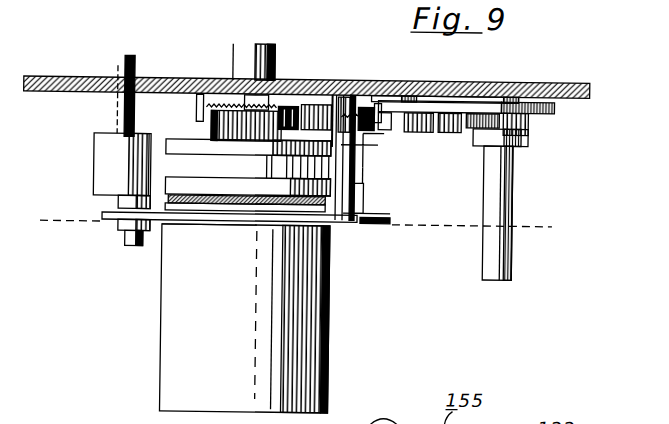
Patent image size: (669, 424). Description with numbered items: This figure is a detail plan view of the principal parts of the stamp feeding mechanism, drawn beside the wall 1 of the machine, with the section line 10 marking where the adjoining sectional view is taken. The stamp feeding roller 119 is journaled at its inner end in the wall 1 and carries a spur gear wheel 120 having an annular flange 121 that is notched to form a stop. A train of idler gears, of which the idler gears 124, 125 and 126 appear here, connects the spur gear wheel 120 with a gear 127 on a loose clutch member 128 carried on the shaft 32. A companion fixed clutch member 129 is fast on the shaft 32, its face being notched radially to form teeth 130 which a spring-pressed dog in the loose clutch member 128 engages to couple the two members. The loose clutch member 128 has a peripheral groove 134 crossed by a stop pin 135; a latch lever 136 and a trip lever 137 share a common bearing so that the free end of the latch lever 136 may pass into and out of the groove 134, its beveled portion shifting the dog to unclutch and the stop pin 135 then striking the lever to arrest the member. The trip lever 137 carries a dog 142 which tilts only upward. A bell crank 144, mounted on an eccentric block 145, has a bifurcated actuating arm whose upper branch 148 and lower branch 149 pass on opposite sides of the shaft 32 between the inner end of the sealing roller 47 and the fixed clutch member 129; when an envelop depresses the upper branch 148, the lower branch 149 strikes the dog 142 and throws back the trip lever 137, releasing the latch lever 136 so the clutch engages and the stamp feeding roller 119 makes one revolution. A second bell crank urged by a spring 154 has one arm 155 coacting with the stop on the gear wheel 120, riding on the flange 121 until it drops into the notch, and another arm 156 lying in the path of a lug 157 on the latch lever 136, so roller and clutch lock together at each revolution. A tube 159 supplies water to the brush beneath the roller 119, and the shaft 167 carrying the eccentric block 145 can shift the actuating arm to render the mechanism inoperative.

The wall 1 is at (432, 82).
The section line 10— 10 is at (20, 234).
The shaft 32 is at (273, 65).
The sealing roller 47 is at (303, 352).
The stamp feeding roller 119 is at (497, 263).
The spur gear wheel 120 is at (540, 117).
The annular flange 121 is at (553, 104).
The idler gear 124 is at (472, 126).
The idler gear 125 is at (403, 96).
The idler gear 126 is at (331, 110).
The gear 127 is at (210, 130).
The loose clutch member 128 is at (170, 146).
The fixed clutch member 129 is at (192, 224).
The teeth 130 is at (242, 209).
The peripheral groove 134 is at (175, 169).
The stop pin 135 is at (262, 168).
The latch lever 136 is at (333, 168).
The trip lever 137 is at (360, 206).
The dog 142 is at (330, 245).
The bell crank 144 is at (107, 221).
The eccentric block 145 is at (95, 140).
The upper branch 148 is at (208, 227).
The lower branch 149 is at (283, 233).
The spring 154 is at (212, 102).
The arm 155 is at (460, 108).
The arm 156 is at (392, 124).
The lug 157 is at (367, 172).
The tube 159 is at (353, 138).
The shaft 167 is at (110, 70).